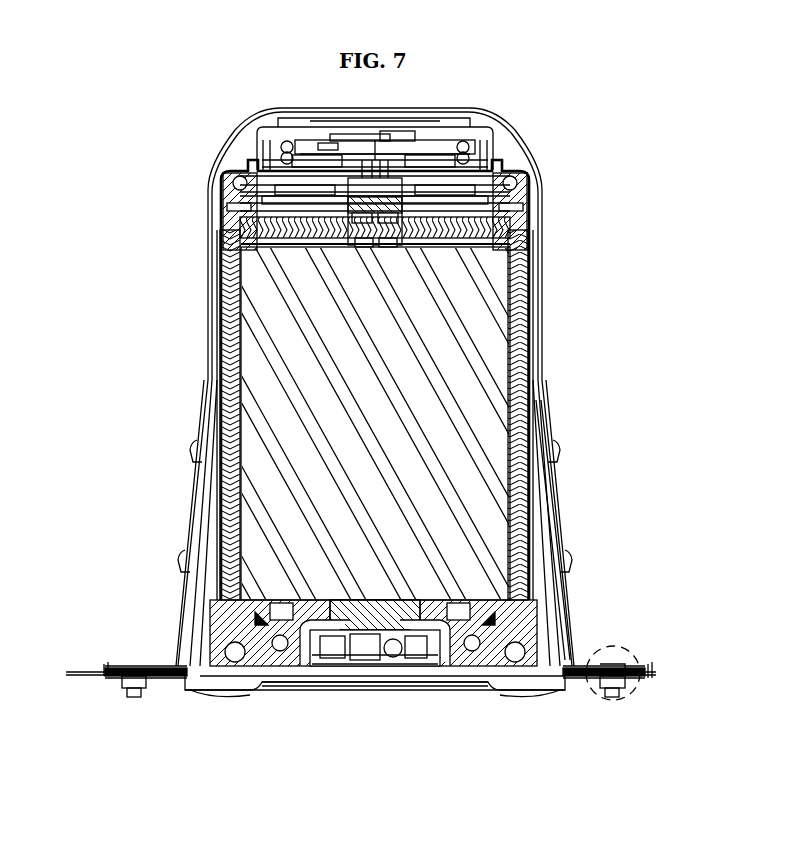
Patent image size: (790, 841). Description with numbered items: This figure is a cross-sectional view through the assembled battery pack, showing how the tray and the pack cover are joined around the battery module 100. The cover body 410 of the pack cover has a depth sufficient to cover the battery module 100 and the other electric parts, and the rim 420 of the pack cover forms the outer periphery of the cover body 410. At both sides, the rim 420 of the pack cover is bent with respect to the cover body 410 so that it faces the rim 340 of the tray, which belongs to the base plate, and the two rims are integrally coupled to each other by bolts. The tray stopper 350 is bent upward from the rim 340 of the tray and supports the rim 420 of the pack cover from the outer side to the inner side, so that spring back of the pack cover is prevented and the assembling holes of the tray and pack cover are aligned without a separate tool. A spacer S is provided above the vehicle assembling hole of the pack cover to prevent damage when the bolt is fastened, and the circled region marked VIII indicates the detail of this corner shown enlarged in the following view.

The battery module 100 is at (490, 330).
The rim of the tray 340 is at (583, 686).
The tray stopper 350 is at (104, 666).
The cover body 410 is at (557, 512).
The rim of the pack cover 420 is at (115, 666).
The spacer S is at (600, 660).
The section view indicator VIII is at (610, 703).